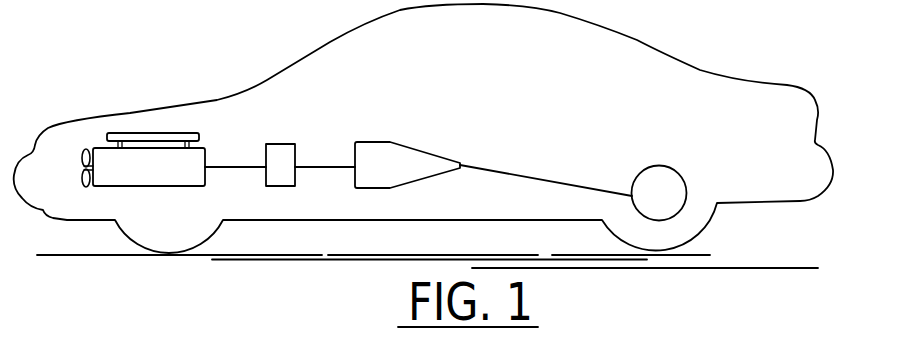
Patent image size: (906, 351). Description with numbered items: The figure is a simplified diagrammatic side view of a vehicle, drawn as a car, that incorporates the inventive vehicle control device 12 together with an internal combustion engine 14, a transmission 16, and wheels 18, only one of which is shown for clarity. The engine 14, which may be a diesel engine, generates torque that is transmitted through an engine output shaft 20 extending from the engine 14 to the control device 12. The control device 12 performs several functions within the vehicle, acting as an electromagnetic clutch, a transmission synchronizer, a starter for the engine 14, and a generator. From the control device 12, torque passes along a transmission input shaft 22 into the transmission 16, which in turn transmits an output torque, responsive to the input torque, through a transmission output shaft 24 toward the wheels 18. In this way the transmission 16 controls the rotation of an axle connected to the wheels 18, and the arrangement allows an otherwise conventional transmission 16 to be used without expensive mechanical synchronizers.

The vehicle control device 12 is at (282, 143).
The internal combustion engine 14 is at (137, 187).
The transmission 16 is at (413, 147).
The wheels 18 is at (677, 173).
The engine output shaft 20 is at (235, 167).
The transmission input shaft 22 is at (313, 170).
The transmission output shaft 24 is at (535, 177).